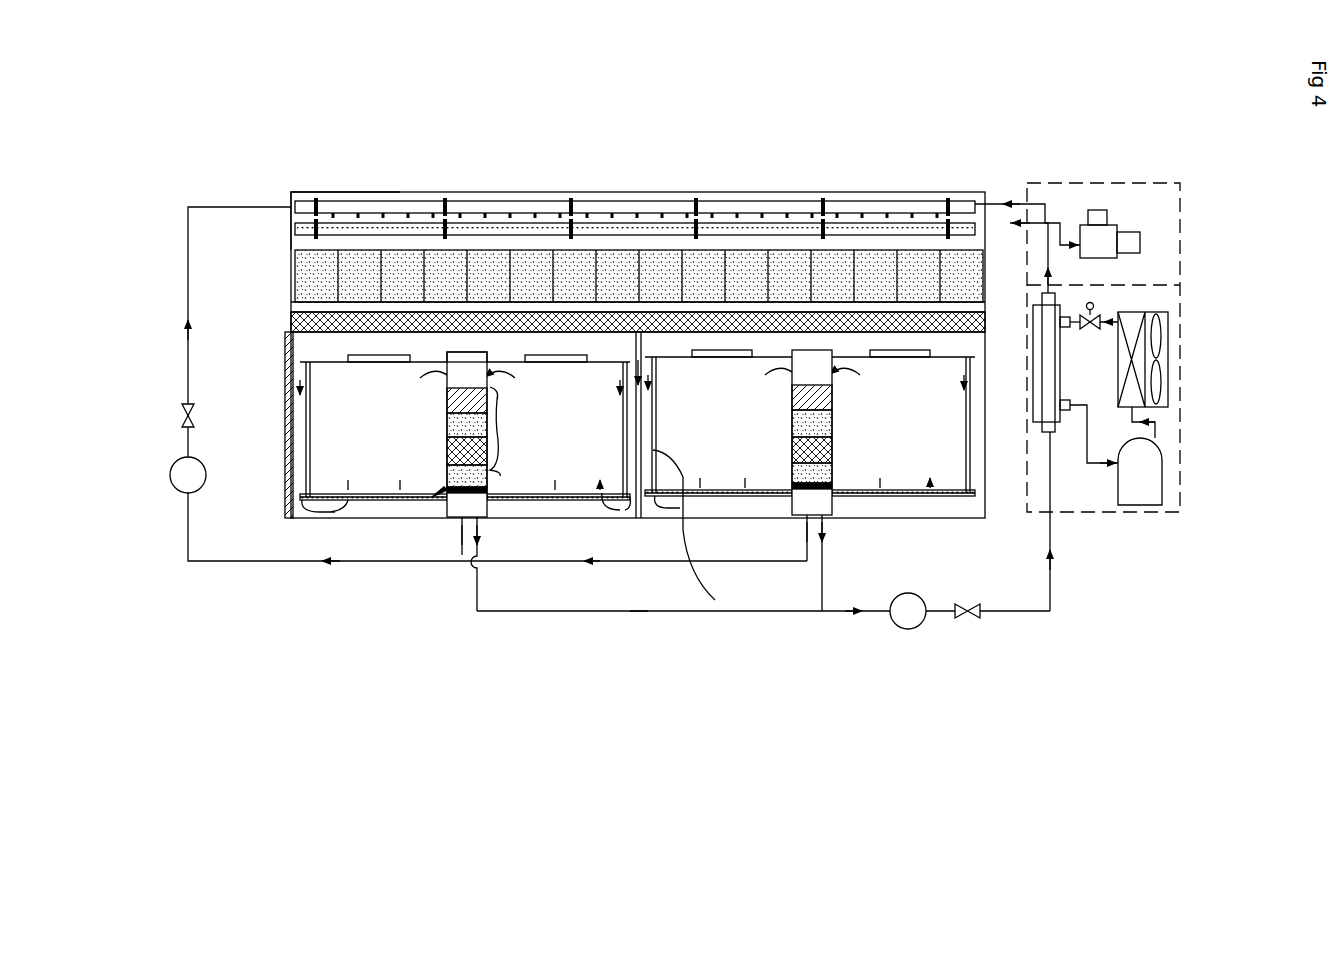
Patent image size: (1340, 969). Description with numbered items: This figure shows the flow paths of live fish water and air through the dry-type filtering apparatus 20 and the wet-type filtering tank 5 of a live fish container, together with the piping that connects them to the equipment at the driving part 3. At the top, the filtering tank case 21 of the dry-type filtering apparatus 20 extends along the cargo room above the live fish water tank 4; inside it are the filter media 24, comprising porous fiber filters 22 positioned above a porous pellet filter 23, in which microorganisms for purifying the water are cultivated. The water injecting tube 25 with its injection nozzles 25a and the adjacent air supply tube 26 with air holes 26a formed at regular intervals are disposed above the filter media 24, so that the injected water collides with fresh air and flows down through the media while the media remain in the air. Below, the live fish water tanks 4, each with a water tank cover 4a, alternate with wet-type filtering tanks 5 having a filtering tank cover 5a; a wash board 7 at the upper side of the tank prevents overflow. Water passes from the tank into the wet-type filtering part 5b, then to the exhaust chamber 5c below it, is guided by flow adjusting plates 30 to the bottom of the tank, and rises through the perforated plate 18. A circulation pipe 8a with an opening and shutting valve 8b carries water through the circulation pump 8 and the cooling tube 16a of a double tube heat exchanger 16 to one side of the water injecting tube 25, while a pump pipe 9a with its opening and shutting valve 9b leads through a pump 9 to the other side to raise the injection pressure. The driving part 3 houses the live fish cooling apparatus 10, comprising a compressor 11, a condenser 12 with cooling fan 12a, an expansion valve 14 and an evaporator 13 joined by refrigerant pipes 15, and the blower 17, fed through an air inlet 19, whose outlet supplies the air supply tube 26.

The driving part 3 is at (1182, 183).
The live fish water tank 4 is at (365, 520).
The water tank cover 4a is at (370, 354).
The wet-type filtering tank 5 is at (517, 436).
The filtering tank cover 5a is at (470, 352).
The wet-type filtering part 5b is at (502, 474).
The exhaust chamber 5c is at (500, 500).
The wash board 7 is at (288, 350).
The circulation pump 8 is at (910, 625).
The circulation pipe 8a is at (625, 612).
The opening and shutting valve 8b is at (968, 618).
The pump 9 is at (172, 478).
The pump pipe 9a is at (248, 562).
The opening and shutting valve 9b is at (180, 414).
The live fish cooling apparatus 10 is at (1182, 480).
The compressor 11 is at (1140, 495).
The condenser 12 is at (1133, 317).
The cooling fan 12a is at (1160, 385).
The evaporator 13 is at (1067, 363).
The expansion valve 14 is at (1092, 330).
The refrigerant pipe 15 is at (1158, 423).
The double tube heat exchanger 16 is at (1067, 297).
The cooling tube 16a is at (1045, 398).
The blower 17 is at (1125, 240).
The perforated plate 18 is at (382, 520).
The air inlet 19 is at (1097, 210).
The dry-type filtering apparatus 20 is at (715, 190).
The filtering tank case 21 is at (283, 200).
The porous fiber filter 22 is at (305, 288).
The porous pellet filter 23 is at (300, 320).
The filter media 24 is at (135, 168).
The water injecting tube 25 is at (635, 148).
The injection nozzle 25a is at (432, 210).
The air supply tube 26 is at (635, 150).
The air hole 26a is at (928, 232).
The flow adjusting plate 30 is at (607, 493).